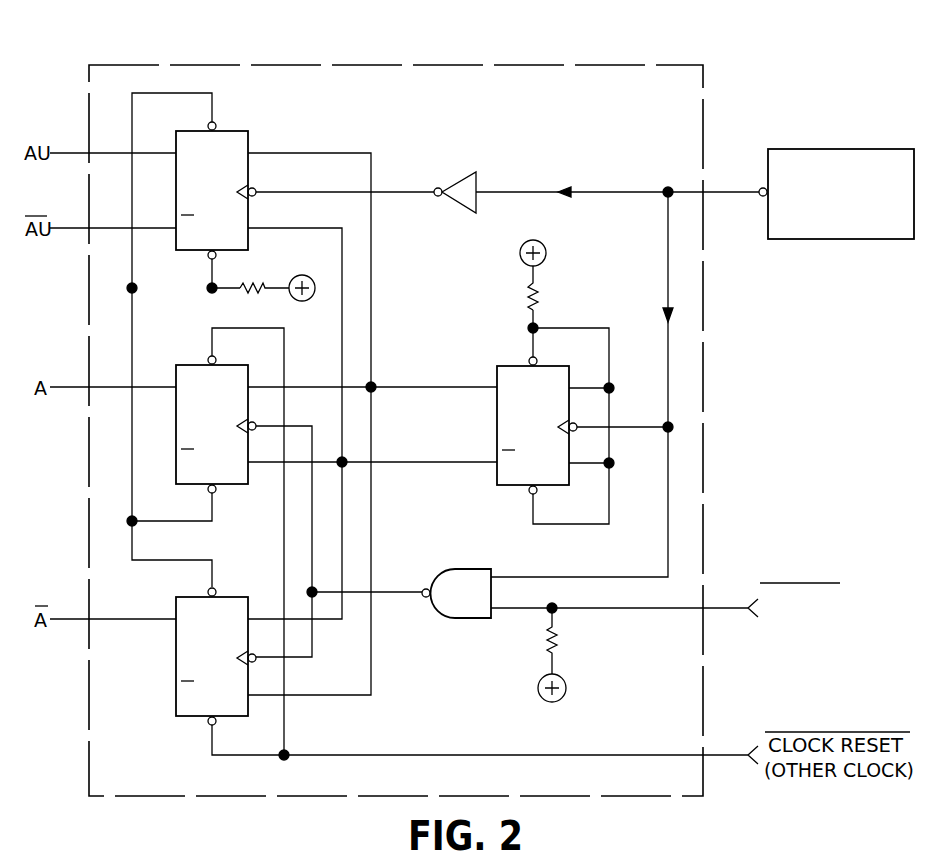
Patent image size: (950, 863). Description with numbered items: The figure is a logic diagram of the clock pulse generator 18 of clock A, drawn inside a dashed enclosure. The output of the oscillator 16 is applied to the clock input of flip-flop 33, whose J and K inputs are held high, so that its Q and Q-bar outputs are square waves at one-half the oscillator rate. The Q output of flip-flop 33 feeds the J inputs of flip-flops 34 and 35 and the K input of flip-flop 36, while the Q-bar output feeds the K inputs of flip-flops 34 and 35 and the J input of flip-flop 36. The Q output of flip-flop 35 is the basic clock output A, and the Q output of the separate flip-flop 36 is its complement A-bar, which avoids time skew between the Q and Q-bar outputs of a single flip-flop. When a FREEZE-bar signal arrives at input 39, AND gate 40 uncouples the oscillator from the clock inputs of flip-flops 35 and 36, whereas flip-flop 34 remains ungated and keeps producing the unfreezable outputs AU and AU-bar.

The clock pulse generator 18 is at (532, 65).
The oscillator 16 is at (838, 149).
The flip-flop 34 is at (248, 140).
The flip-flop 35 is at (193, 365).
The flip-flop 36 is at (243, 597).
The flip-flop 33 is at (513, 366).
The AND gate 40 is at (463, 569).
The input 39 is at (748, 600).